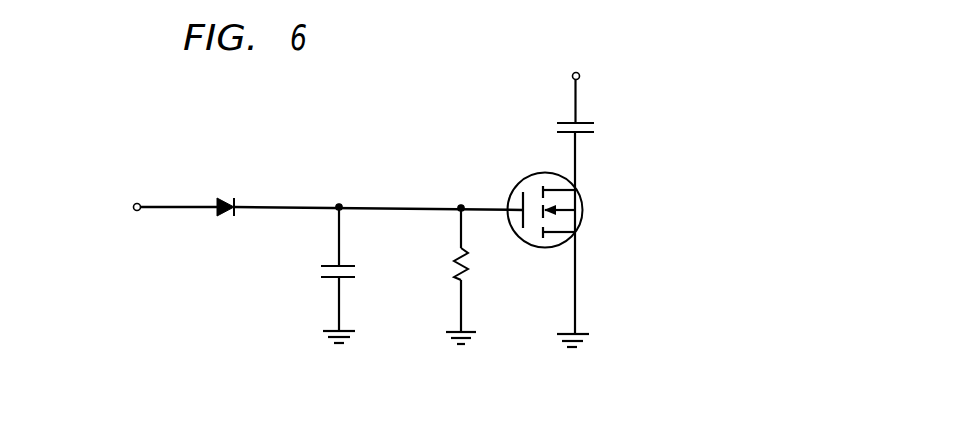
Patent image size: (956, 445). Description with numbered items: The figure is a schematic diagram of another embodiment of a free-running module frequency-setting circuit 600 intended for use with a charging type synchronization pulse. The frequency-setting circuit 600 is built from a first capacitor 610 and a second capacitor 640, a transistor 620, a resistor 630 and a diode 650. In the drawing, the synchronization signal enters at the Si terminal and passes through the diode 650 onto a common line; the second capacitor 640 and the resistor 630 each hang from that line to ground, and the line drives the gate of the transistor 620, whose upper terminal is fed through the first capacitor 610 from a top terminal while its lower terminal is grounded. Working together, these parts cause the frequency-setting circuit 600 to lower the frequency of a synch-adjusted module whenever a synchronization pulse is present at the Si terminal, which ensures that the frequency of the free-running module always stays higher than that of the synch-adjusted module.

The frequency-setting circuit 600 is at (651, 48).
The first capacitor 610 is at (595, 128).
The transistor 620 is at (582, 211).
The resistor 630 is at (470, 275).
The second capacitor 640 is at (357, 272).
The diode 650 is at (228, 196).